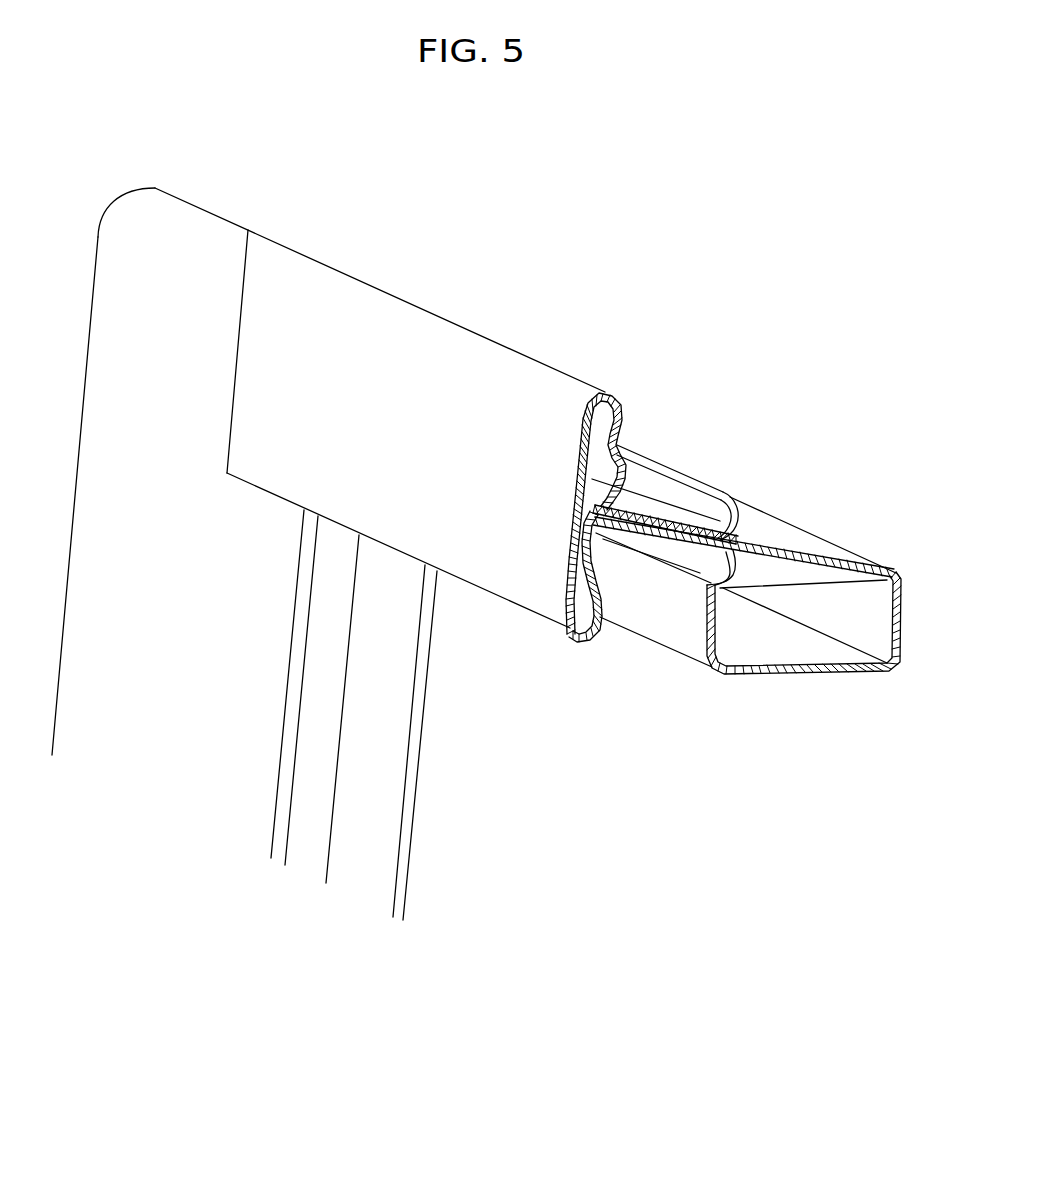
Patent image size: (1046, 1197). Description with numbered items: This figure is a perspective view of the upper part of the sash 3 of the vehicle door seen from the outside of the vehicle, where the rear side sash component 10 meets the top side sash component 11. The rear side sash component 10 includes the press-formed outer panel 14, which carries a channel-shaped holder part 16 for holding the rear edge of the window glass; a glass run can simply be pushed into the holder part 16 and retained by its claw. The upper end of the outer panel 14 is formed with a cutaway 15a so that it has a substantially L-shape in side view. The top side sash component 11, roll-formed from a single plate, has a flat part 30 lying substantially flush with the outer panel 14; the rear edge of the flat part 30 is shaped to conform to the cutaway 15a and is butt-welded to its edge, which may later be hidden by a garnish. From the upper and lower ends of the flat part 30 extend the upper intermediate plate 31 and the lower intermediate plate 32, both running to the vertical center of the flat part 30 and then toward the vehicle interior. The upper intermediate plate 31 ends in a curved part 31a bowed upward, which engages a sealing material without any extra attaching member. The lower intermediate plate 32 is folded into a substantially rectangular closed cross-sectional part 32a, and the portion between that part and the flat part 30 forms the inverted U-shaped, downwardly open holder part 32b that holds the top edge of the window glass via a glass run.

The sash 3 is at (537, 180).
The rear side sash component 10 is at (70, 487).
The top side sash component 11 is at (441, 316).
The outer panel 14 is at (290, 677).
The cutaway 15a is at (247, 289).
The holder part 16 is at (387, 732).
The flat part 30 is at (570, 405).
The upper intermediate plate 31 is at (658, 520).
The curved part 31a is at (697, 480).
The lower intermediate plate 32 is at (593, 642).
The closed cross-sectional part 32a is at (738, 676).
The holder part 32b is at (664, 545).